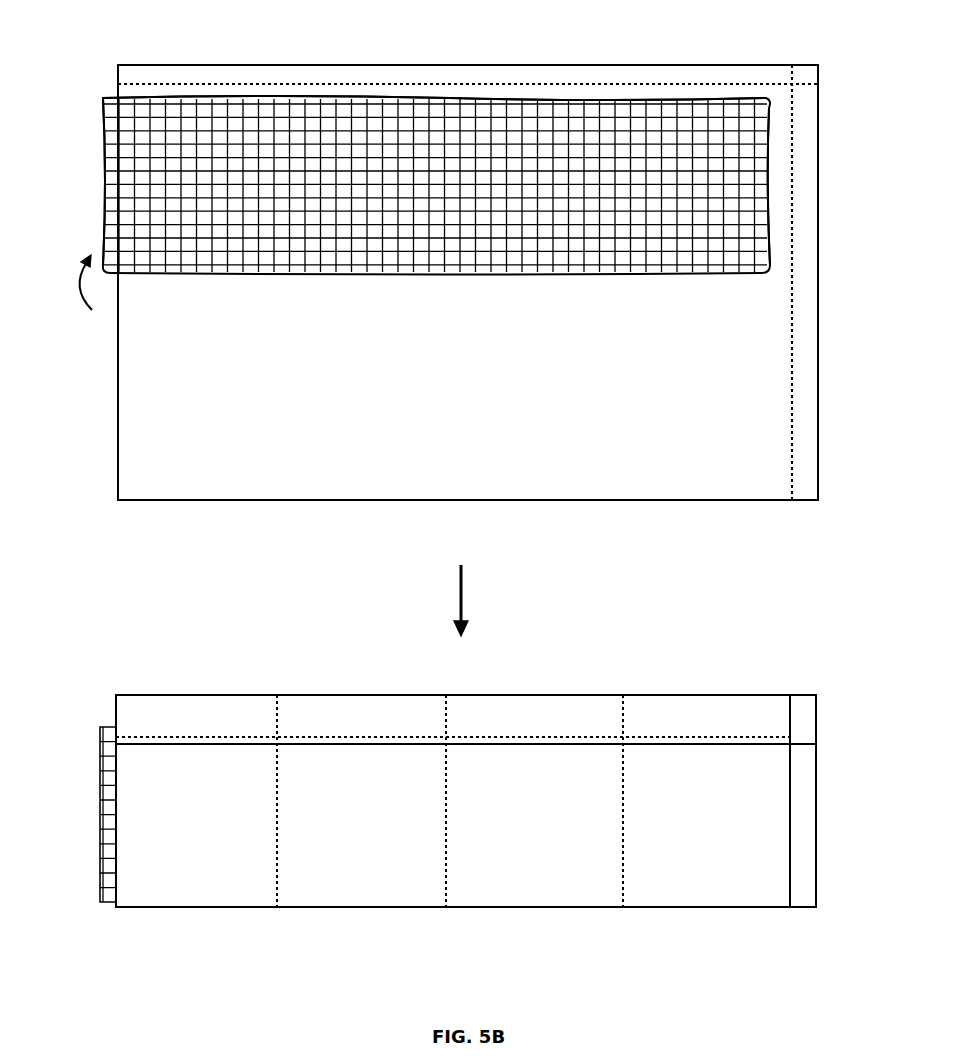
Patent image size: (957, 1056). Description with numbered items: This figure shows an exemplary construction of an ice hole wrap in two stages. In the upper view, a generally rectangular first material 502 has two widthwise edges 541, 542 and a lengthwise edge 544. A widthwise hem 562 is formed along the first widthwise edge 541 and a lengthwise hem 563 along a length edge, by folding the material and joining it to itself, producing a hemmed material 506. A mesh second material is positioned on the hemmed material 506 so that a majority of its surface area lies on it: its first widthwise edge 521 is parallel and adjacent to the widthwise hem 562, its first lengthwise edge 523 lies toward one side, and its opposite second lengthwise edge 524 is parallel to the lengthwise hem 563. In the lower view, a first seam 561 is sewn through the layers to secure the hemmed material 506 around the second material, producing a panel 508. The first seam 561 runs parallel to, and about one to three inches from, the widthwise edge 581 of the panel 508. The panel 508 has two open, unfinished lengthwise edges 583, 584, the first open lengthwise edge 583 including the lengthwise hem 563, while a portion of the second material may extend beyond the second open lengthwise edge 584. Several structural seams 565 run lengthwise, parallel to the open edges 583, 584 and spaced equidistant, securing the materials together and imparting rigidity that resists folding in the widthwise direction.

The first material 502 is at (752, 210).
The hemmed material 506 is at (709, 65).
The panel 508 is at (742, 695).
The first widthwise edge of second material 521 is at (357, 98).
The first lengthwise edge of second material 523 is at (103, 141).
The second lengthwise edge of second material 524 is at (769, 129).
The first widthwise edge of first material 541 is at (422, 65).
The second widthwise edge of first material 542 is at (389, 500).
The lengthwise edge of first material 544 is at (117, 352).
The first seam 561 is at (425, 737).
The widthwise hem 562 is at (515, 84).
The lengthwise hem 563 is at (792, 173).
The structural seams 565 is at (277, 833).
The widthwise edge of panel 581 is at (582, 695).
The first open lengthwise edge of panel 583 is at (818, 764).
The second open lengthwise edge of panel 584 is at (101, 778).